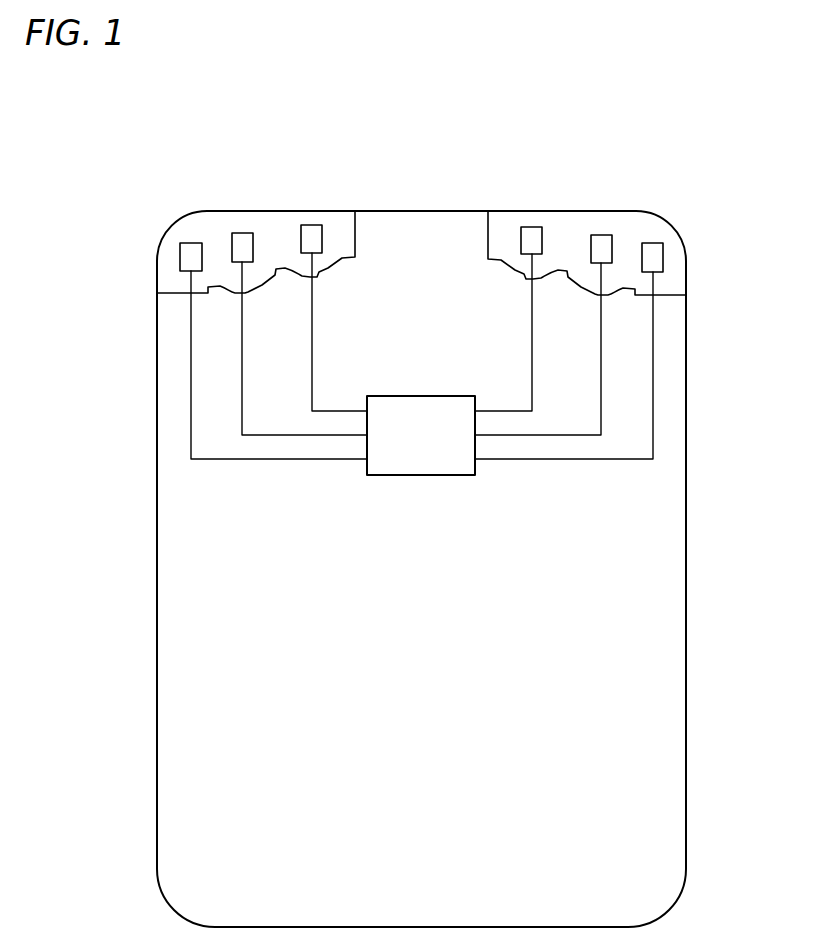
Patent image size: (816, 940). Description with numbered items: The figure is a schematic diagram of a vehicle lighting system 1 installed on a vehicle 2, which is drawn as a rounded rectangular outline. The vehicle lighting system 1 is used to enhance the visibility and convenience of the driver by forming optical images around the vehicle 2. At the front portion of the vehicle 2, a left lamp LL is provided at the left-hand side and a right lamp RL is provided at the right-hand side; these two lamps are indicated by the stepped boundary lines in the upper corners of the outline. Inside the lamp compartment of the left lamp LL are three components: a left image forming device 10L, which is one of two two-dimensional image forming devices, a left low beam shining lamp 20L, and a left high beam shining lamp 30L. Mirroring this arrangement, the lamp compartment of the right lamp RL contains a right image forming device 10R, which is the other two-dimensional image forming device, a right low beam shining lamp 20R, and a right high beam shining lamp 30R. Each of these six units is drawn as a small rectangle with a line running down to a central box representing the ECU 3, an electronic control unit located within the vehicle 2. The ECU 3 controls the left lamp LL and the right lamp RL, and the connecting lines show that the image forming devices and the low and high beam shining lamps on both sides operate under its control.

The vehicle lighting system 1 is at (720, 147).
The vehicle 2 is at (688, 500).
The ECU (Electronic Control Unit) 3 is at (421, 395).
The left image forming device 10L is at (192, 242).
The left low beam shining lamp 20L is at (245, 232).
The left high beam shining lamp 30L is at (313, 224).
The right image forming device 10R is at (655, 242).
The right low beam shining lamp 20R is at (603, 234).
The right high beam shining lamp 30R is at (533, 226).
The left lamp LL is at (157, 276).
The right lamp RL is at (687, 271).